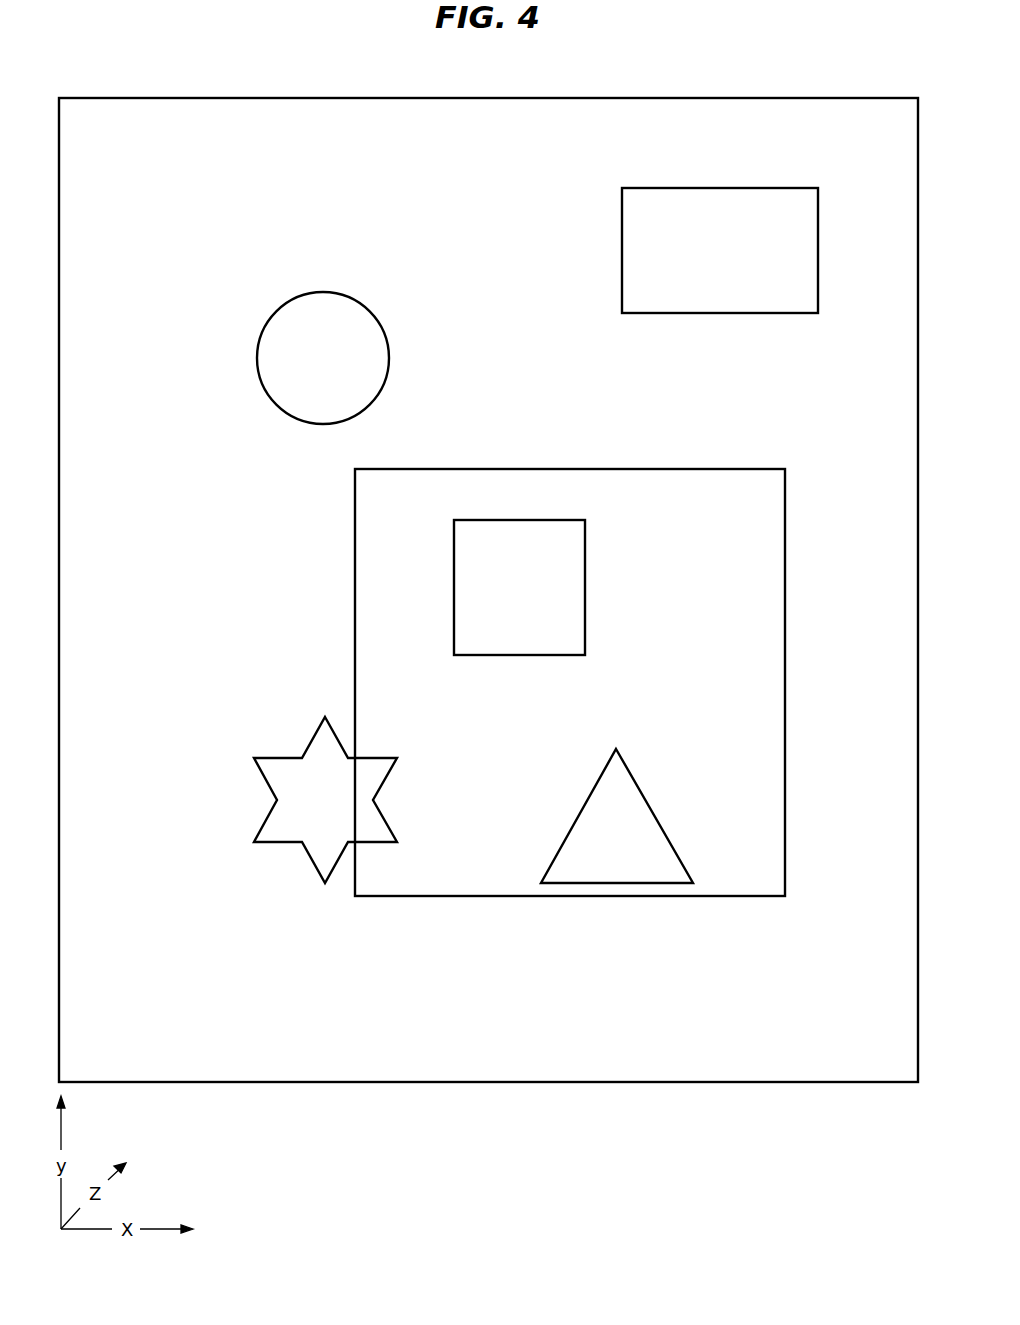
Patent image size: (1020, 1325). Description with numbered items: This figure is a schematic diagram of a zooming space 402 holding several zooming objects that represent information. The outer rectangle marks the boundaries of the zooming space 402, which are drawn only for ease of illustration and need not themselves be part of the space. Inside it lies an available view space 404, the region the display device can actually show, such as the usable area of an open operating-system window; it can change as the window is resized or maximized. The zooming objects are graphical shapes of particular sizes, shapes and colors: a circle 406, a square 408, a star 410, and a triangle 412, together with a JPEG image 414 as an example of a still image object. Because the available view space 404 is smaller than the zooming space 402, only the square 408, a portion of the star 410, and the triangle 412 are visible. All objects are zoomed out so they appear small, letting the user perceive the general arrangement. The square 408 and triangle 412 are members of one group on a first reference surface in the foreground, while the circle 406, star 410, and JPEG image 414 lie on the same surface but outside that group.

The zooming space 402 is at (570, 97).
The available view space 404 is at (570, 468).
The circle 406 is at (388, 336).
The square 408 is at (587, 538).
The star 410 is at (375, 757).
The triangle 412 is at (655, 805).
The JPEG image 414 is at (820, 220).